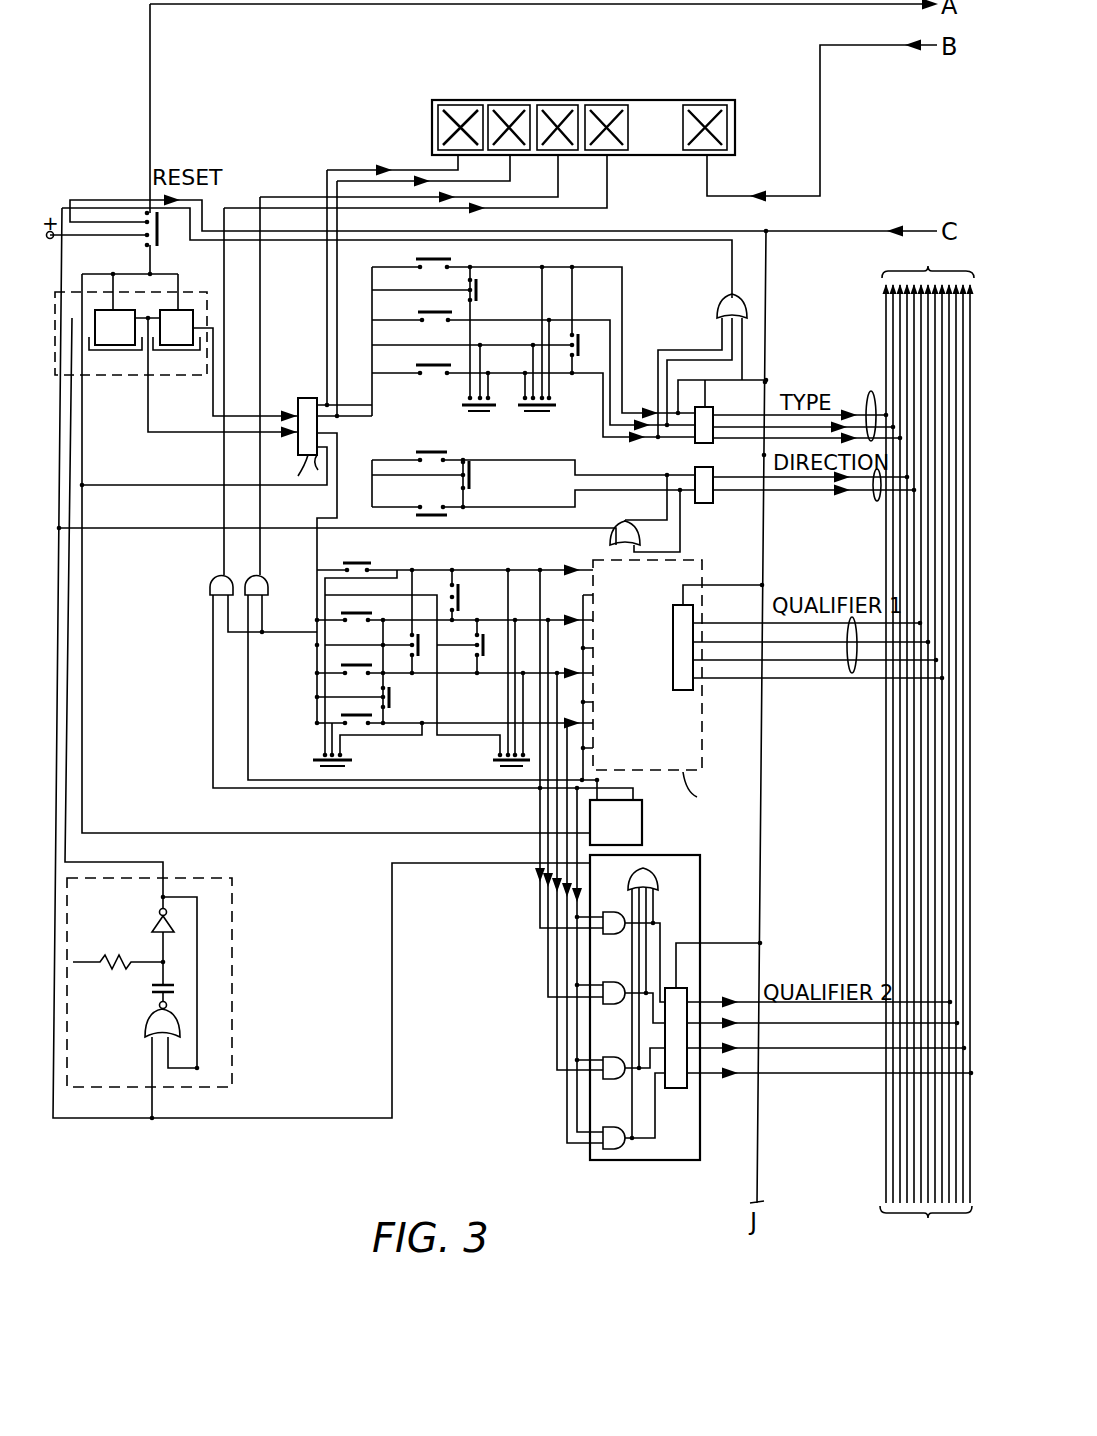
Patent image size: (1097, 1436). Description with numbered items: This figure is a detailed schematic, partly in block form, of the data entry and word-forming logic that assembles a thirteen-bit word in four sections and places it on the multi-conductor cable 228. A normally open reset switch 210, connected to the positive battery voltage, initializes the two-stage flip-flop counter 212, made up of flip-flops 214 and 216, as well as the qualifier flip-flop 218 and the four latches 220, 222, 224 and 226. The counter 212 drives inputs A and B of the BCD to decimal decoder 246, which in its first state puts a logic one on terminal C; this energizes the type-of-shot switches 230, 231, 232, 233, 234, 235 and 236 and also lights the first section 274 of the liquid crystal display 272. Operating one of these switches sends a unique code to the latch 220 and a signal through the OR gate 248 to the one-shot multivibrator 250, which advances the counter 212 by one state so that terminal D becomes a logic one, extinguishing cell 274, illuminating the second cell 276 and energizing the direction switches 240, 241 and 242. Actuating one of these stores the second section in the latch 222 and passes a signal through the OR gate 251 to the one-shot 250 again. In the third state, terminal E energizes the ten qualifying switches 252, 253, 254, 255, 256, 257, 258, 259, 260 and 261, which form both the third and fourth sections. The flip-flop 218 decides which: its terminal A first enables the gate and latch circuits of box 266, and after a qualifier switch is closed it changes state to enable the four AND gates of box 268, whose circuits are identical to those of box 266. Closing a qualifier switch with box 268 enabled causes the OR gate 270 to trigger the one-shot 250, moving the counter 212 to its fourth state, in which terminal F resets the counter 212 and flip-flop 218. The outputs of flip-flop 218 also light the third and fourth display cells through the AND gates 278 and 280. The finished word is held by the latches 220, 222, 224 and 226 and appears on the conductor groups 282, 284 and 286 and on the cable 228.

The reset switch 210 is at (165, 240).
The two-stage flip-flop counter 212 is at (131, 359).
The flip-flop 214 is at (128, 350).
The flip-flop 216 is at (176, 343).
The qualifier flip-flop 218 is at (645, 822).
The latch 220 is at (712, 410).
The latch 222 is at (712, 503).
The latch 224 is at (683, 690).
The latch 226 is at (683, 1088).
The multi-conductor cable 228 is at (880, 797).
The switch 230 is at (442, 256).
The switch 231 is at (433, 318).
The switch 232 is at (482, 290).
The switch 233 is at (432, 380).
The switch 234 is at (588, 344).
The switch 235 is at (478, 415).
The switch 236 is at (536, 412).
The switch 240 is at (428, 466).
The switch 241 is at (455, 518).
The switch 242 is at (478, 484).
The BCD to decimal decoder 246 is at (308, 398).
The OR gate 248 is at (722, 300).
The one-shot multivibrator 250 is at (232, 1000).
The OR gate 251 is at (608, 530).
The qualifying switch 252 is at (352, 558).
The qualifying switch 253 is at (478, 560).
The qualifying switch 254 is at (365, 625).
The qualifying switch 255 is at (427, 644).
The qualifying switch 256 is at (492, 655).
The qualifying switch 257 is at (345, 662).
The qualifying switch 258 is at (400, 699).
The qualifying switch 259 is at (345, 712).
The qualifying switch 260 is at (488, 762).
The qualifying switch 261 is at (355, 766).
The box 266 is at (714, 791).
The box 268 is at (675, 1030).
The OR gate 270 is at (655, 866).
The liquid crystal display 272 is at (569, 100).
The first section of display 274 is at (458, 103).
The second cell of display 276 is at (500, 103).
The AND gate 278 is at (262, 572).
The AND gate 280 is at (212, 578).
The conductor group 282 is at (872, 392).
The conductor group 284 is at (875, 500).
The conductor group 286 is at (850, 673).